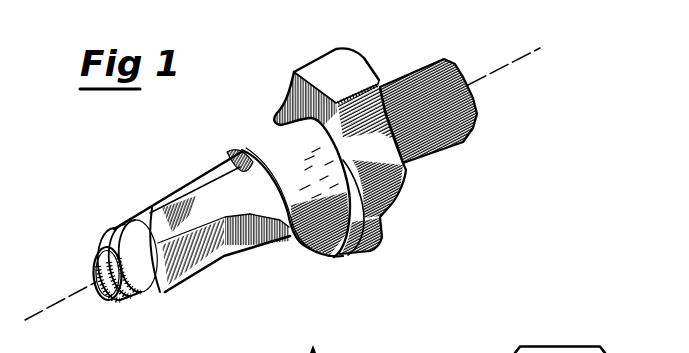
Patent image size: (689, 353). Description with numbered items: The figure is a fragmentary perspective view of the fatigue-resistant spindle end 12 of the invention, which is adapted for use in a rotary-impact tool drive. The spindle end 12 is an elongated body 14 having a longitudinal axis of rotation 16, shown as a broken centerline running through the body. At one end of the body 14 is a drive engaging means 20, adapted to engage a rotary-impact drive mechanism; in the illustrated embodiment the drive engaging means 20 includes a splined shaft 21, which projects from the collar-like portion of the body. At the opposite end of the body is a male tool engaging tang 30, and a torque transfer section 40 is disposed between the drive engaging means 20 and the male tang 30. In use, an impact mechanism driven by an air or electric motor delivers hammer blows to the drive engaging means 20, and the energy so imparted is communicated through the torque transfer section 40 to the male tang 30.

The fatigue-resistant spindle end 12 is at (210, 218).
The elongated body 14 is at (292, 238).
The longitudinal axis of rotation 16 is at (40, 311).
The drive engaging means 20 is at (400, 0).
The splined shaft 21 is at (406, 73).
The male tool engaging tang 30 is at (79, 213).
The torque transfer section 40 is at (130, 177).